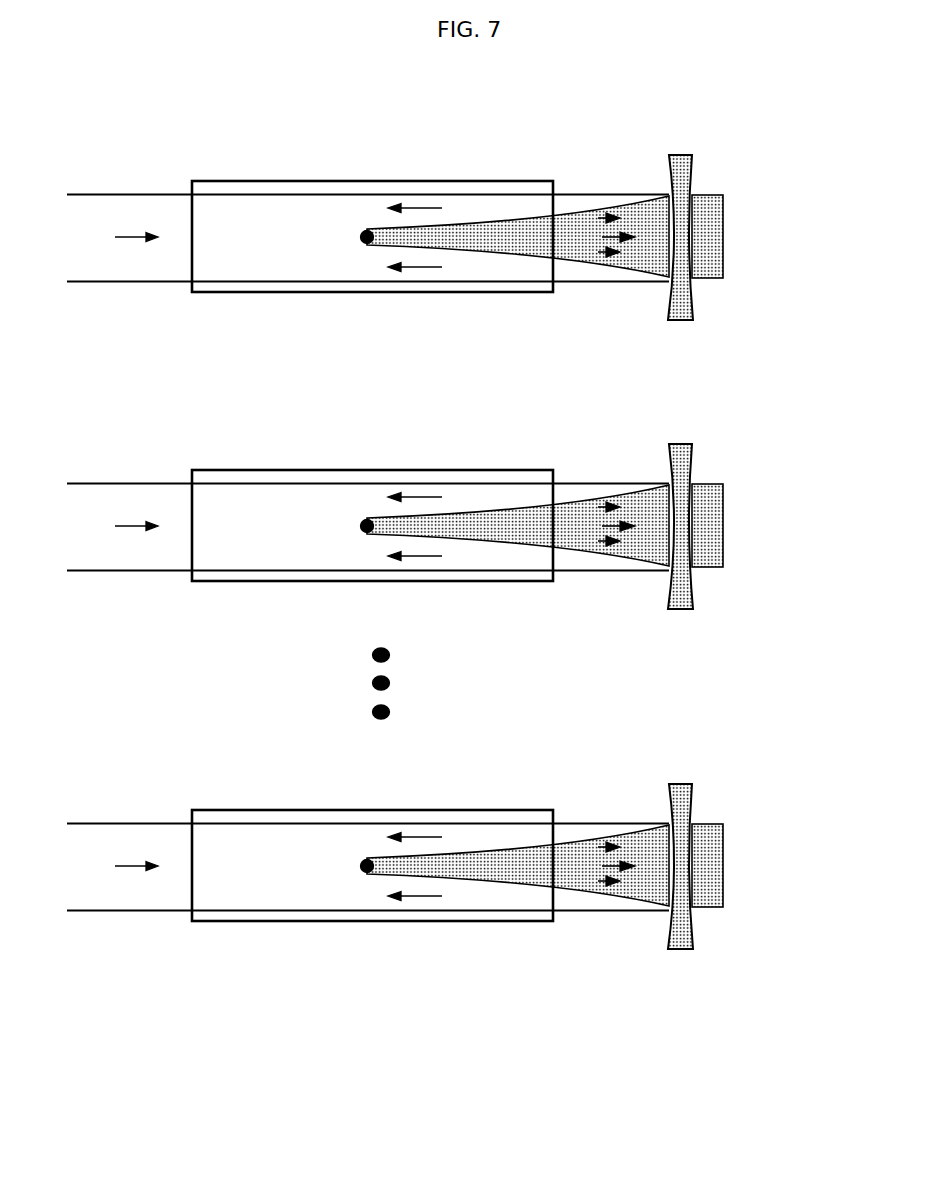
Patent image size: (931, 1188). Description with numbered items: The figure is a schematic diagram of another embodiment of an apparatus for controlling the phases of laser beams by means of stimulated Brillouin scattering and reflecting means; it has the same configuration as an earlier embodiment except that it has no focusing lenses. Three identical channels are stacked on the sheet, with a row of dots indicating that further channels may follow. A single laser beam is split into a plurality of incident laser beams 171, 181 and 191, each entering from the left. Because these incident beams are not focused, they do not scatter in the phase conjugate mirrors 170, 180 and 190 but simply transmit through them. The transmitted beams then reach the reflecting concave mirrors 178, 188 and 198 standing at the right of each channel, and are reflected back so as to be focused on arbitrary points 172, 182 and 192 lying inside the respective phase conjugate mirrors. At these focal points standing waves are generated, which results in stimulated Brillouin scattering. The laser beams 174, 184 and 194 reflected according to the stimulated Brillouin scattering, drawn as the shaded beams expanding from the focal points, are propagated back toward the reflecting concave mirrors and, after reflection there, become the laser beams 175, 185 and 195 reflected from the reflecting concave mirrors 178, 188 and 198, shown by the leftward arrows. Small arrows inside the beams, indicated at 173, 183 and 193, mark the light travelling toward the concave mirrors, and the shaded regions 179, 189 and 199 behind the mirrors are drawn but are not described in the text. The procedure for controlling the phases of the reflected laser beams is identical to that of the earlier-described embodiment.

The phase conjugate mirror 170 is at (370, 908).
The incident laser beam 171 is at (122, 907).
The arbitrary point 172 is at (348, 916).
The forward propagating light 173 is at (619, 906).
The laser beam reflected according to stimulated Brillouin scattering 174 is at (518, 837).
The laser beam reflected from reflecting concave mirror 175 is at (413, 829).
The reflecting concave mirror 178 is at (716, 897).
The optical element 179 is at (758, 884).
The phase conjugate mirror 180 is at (370, 568).
The incident laser beam 181 is at (122, 567).
The arbitrary point 182 is at (348, 576).
The forward propagating light 183 is at (619, 566).
The laser beam reflected according to stimulated Brillouin scattering 184 is at (518, 497).
The laser beam reflected from reflecting concave mirror 185 is at (413, 489).
The reflecting concave mirror 188 is at (716, 557).
The optical element 189 is at (758, 544).
The phase conjugate mirror 190 is at (232, 293).
The incident laser beam 191 is at (130, 237).
The arbitrary point 192 is at (365, 243).
The forward propagating light 193 is at (642, 256).
The laser beam reflected according to stimulated Brillouin scattering 194 is at (590, 218).
The laser beam reflected from reflecting concave mirror 195 is at (427, 208).
The reflecting concave mirror 198 is at (693, 320).
The optical element 199 is at (725, 265).